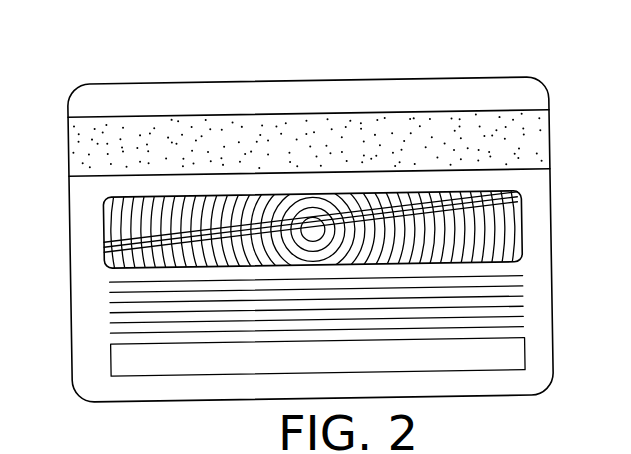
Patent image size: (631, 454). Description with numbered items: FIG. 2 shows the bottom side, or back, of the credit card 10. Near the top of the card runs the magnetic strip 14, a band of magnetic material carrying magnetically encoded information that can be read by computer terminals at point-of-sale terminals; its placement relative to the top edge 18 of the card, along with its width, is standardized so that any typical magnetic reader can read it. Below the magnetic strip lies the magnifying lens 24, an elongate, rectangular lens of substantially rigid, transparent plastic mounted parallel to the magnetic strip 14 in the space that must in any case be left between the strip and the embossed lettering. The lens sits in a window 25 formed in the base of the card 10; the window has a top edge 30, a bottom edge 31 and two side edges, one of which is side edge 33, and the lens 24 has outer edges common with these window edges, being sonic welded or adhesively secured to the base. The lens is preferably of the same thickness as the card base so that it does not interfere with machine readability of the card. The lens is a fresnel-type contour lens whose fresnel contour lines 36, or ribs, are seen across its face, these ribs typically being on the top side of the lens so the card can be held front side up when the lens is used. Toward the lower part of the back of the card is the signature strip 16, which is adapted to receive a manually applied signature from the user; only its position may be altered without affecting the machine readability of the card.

The card 10 is at (541, 58).
The top edge 18 is at (311, 240).
The magnetic strip 14 is at (309, 143).
The magnifying lens 24 is at (313, 229).
The top edge of window 30 is at (313, 229).
The side edge of window 33 is at (102, 212).
The window 25 is at (102, 241).
The fresnel contour lines 36 is at (310, 222).
The bottom edge of window 31 is at (317, 304).
The signature strip 16 is at (318, 357).